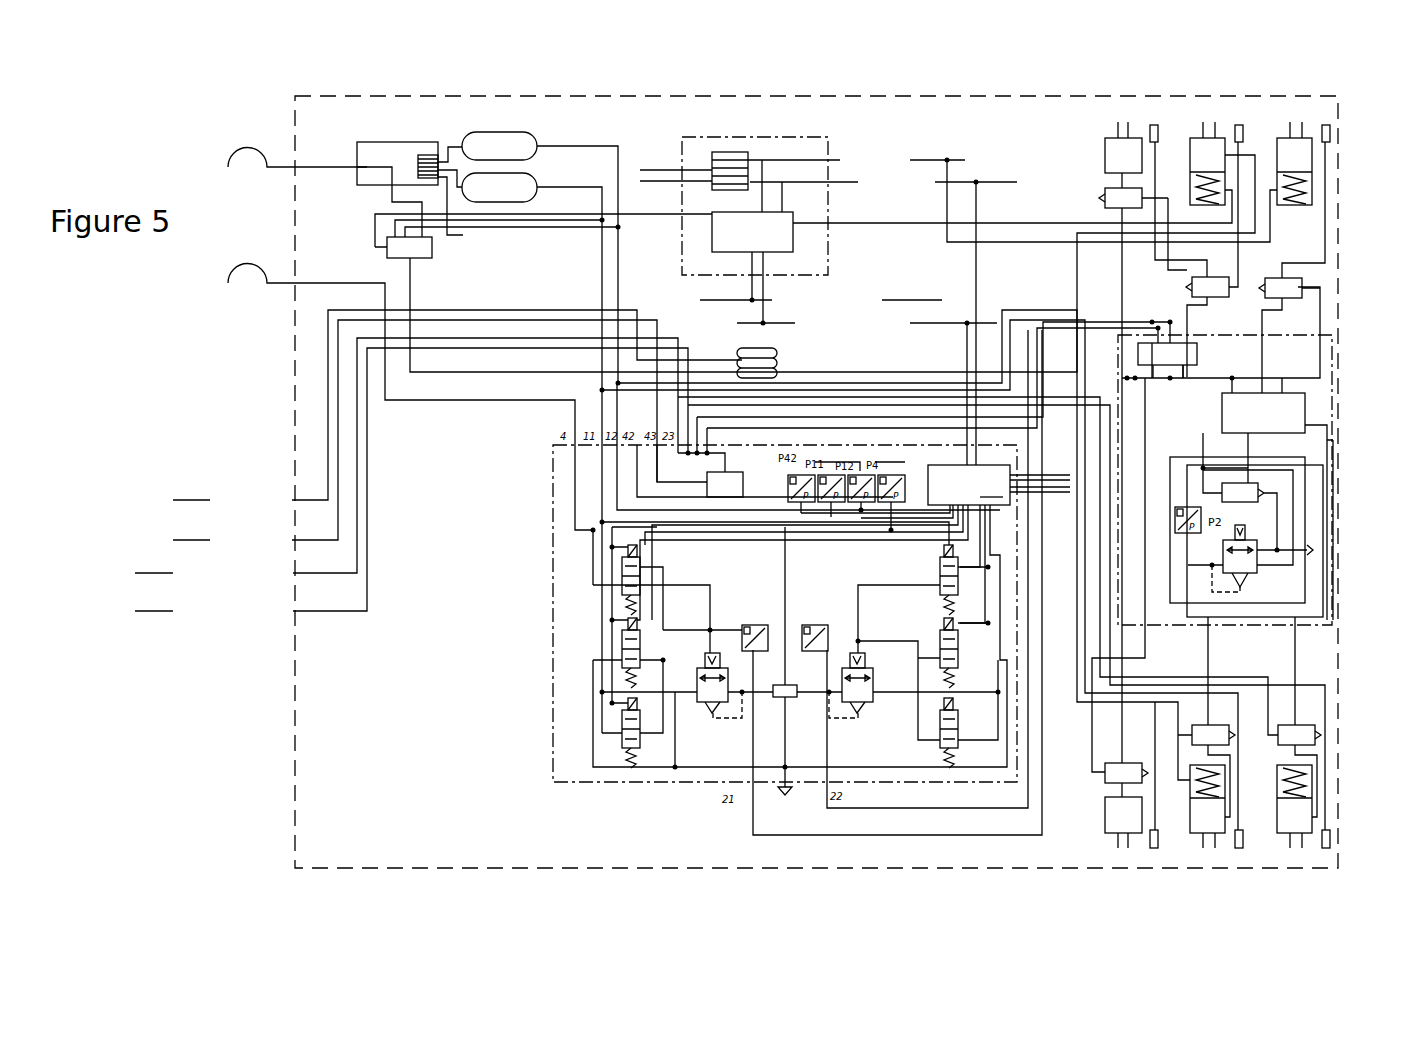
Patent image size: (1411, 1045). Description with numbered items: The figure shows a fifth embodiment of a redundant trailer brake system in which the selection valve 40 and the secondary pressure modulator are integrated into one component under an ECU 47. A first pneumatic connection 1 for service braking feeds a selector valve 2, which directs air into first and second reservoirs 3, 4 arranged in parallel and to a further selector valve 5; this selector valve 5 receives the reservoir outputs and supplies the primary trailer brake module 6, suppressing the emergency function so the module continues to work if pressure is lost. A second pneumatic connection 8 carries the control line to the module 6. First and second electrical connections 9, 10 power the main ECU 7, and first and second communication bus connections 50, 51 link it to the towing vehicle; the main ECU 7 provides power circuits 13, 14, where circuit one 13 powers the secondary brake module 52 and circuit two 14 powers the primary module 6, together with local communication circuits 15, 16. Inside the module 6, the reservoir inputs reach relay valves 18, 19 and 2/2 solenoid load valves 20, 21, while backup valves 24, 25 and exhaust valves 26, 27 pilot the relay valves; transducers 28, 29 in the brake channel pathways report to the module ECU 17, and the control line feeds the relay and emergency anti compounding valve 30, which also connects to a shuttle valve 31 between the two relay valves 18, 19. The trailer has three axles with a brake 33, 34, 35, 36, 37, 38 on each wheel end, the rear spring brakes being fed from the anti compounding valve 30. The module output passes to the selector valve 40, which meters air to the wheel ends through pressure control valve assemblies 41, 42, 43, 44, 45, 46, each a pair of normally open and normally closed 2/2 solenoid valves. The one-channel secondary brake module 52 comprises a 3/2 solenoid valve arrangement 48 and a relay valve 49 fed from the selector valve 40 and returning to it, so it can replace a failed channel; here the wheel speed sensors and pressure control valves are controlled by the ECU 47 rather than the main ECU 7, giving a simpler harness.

The first pneumatic connection 1 is at (816, 458).
The selector valve 2 is at (345, 143).
The first reservoir 3 is at (520, 125).
The second reservoir 4 is at (499, 104).
The selector valve 5 is at (543, 348).
The primary trailer brake module 6 is at (748, 613).
The main electronic control unit 7 is at (724, 186).
The second pneumatic connection 8 is at (410, 407).
The first electrical connection 9 is at (448, 410).
The second electrical connection 10 is at (395, 435).
The first local trailer power circuit 13 is at (857, 139).
The second local trailer power circuit 14 is at (889, 161).
The first local communication circuit 15 is at (821, 283).
The second local communication circuit 16 is at (867, 345).
The ECU of the primary trailer brake module 17 is at (969, 485).
The relay valve 18 is at (714, 705).
The relay valve 19 is at (862, 705).
The 2/2 solenoid load valve 20 is at (605, 774).
The 2/2 solenoid load valve 21 is at (971, 812).
The 2/2 solenoid backup valve 24 is at (554, 580).
The 2/2 solenoid backup valve 25 is at (917, 580).
The exhaust valve 26 is at (554, 653).
The exhaust valve 27 is at (924, 646).
The pressure transducer 28 is at (746, 619).
The pressure transducer 29 is at (818, 619).
The relay and emergency anti compounding valve 30 is at (743, 479).
The shuttle valve 31 is at (782, 718).
The brake 33 is at (1113, 814).
The brake 34 is at (1110, 119).
The brake 35 is at (1198, 846).
The brake 36 is at (1018, 137).
The brake 37 is at (1285, 846).
The brake 38 is at (1282, 128).
The selector valve 40 is at (1171, 360).
The pressure control valve assembly 41 is at (1141, 717).
The pressure control valve assembly 42 is at (1109, 466).
The pressure control valve assembly 43 is at (1282, 727).
The pressure control valve assembly 44 is at (1286, 304).
The pressure control valve assembly 45 is at (1332, 747).
The pressure control valve assembly 46 is at (1323, 324).
The ECU 47 is at (1295, 431).
The 3/2 solenoid valve arrangement 48 is at (1294, 508).
The relay valve 49 is at (1287, 537).
The first communication bus connection 50 is at (406, 520).
The second communication bus connection 51 is at (411, 525).
The secondary brake module 52 is at (1278, 537).